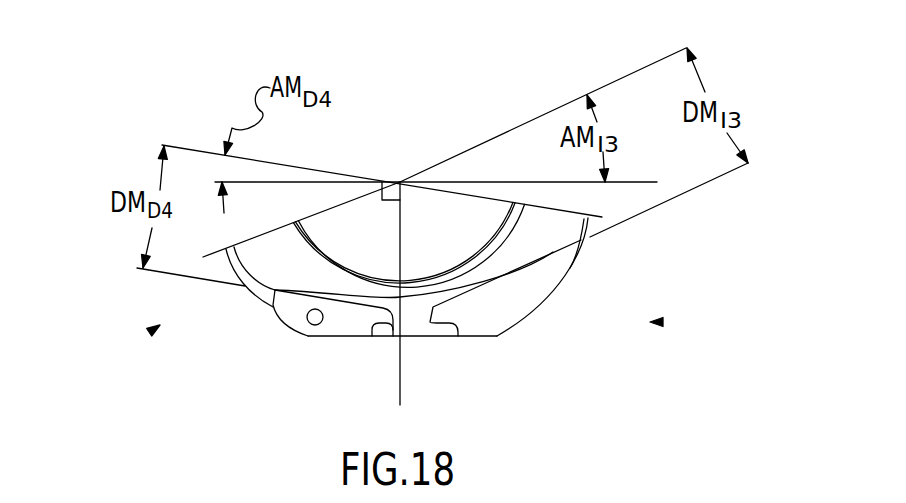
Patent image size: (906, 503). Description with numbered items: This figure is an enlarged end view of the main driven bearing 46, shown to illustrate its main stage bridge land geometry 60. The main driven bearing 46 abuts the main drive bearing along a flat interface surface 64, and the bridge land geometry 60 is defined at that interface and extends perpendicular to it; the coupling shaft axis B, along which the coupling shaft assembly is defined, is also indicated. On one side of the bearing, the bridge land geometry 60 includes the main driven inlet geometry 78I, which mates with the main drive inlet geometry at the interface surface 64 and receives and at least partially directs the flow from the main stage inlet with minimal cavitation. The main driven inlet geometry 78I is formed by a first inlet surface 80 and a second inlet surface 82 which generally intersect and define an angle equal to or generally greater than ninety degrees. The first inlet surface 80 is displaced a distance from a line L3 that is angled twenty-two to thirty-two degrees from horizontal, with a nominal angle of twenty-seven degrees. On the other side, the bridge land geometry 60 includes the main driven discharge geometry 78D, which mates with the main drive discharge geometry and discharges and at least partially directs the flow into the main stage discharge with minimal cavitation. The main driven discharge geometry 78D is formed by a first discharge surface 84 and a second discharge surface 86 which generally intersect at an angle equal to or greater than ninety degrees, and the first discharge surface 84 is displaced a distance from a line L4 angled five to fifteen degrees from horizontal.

The main driven bearing 46 is at (432, 210).
The main stage bridge land geometry 60 is at (418, 354).
The interface surface 64 is at (330, 337).
The main driven discharge geometry 78D is at (158, 327).
The main driven inlet geometry 78I is at (652, 322).
The first inlet surface 80 is at (571, 268).
The second inlet surface 82 is at (458, 338).
The first discharge surface 84 is at (272, 310).
The second discharge surface 86 is at (373, 337).
The line L3 is at (552, 112).
The line L4 is at (197, 147).
The coupling shaft axis B is at (398, 180).